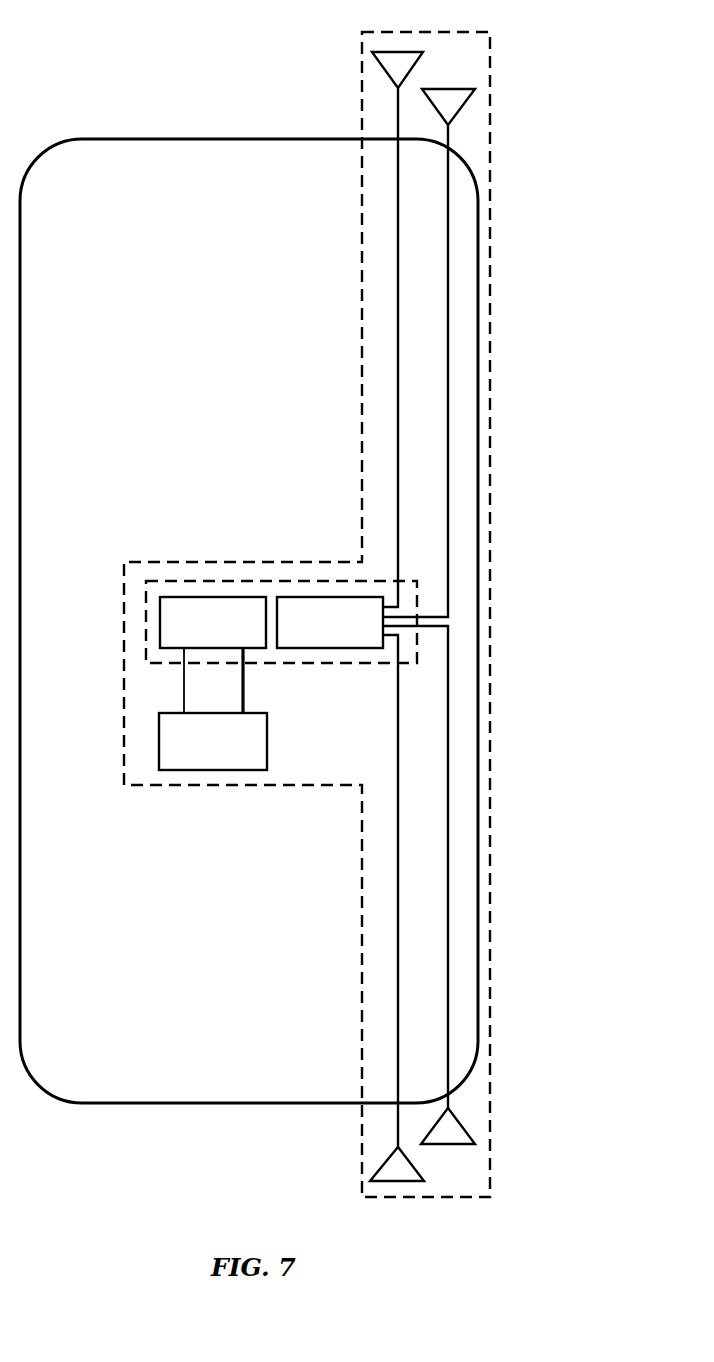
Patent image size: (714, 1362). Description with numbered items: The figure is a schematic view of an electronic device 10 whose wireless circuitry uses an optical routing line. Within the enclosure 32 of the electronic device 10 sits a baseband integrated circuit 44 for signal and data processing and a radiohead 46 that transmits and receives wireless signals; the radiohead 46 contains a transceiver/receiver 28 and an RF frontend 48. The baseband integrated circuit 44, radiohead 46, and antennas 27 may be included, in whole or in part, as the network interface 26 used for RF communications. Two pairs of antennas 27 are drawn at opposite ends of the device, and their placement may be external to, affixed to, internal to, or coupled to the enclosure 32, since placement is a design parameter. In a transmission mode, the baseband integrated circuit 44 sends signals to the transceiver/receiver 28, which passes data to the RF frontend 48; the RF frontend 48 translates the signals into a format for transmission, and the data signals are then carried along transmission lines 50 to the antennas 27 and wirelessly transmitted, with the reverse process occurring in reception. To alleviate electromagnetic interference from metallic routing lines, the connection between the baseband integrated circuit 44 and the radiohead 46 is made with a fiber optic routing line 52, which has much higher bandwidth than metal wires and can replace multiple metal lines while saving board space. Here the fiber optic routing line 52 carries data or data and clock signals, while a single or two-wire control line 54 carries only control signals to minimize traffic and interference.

The electronic device 10 is at (564, 47).
The network interface 26 is at (491, 614).
The antenna 27 is at (447, 88).
The transceiver/receiver 28 is at (212, 596).
The enclosure 32 is at (247, 138).
The baseband integrated circuit 44 is at (212, 771).
The radiohead 46 is at (142, 616).
The RF frontend 48 is at (329, 596).
The transmission lines 50 is at (449, 388).
The fiber optic routing line 52 is at (245, 688).
The control line 54 is at (182, 688).